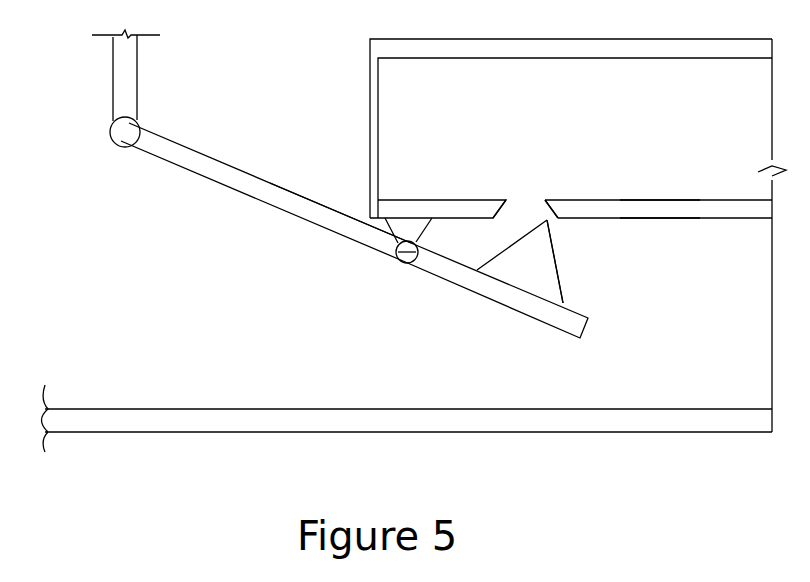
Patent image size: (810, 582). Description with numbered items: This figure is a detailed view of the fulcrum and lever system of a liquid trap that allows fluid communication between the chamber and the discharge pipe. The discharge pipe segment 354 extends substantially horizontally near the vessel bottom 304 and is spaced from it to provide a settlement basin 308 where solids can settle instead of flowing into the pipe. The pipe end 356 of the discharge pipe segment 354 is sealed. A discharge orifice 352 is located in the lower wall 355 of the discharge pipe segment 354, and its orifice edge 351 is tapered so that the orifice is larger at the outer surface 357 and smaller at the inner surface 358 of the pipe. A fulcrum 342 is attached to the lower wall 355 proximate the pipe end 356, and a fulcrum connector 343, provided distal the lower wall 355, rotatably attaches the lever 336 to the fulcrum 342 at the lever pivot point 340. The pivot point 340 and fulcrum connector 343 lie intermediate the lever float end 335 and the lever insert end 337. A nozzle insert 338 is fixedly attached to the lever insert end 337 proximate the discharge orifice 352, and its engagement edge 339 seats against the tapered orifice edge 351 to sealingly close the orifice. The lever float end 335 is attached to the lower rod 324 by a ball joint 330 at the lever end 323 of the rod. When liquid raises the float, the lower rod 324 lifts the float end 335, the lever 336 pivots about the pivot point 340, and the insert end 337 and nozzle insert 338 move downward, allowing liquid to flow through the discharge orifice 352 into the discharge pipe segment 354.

The bottom 304 is at (217, 422).
The settlement basin 308 is at (554, 410).
The lever end 323 is at (123, 98).
The lower rod 324 is at (122, 50).
The ball joint 330 is at (123, 137).
The lever float end 335 is at (160, 150).
The lever 336 is at (348, 230).
The lever insert end 337 is at (545, 315).
The nozzle insert 338 is at (540, 272).
The engagement edge 339 is at (553, 228).
The lever pivot point 340 is at (407, 267).
The fulcrum 342 is at (405, 220).
The fulcrum connector 343 is at (400, 262).
The orifice edge 351 is at (511, 212).
The discharge orifice 352 is at (525, 213).
The discharge pipe segment 354 is at (640, 101).
The lower wall 355 is at (590, 212).
The pipe end 356 is at (368, 90).
The outer surface 357 is at (673, 219).
The inner surface 358 is at (648, 200).